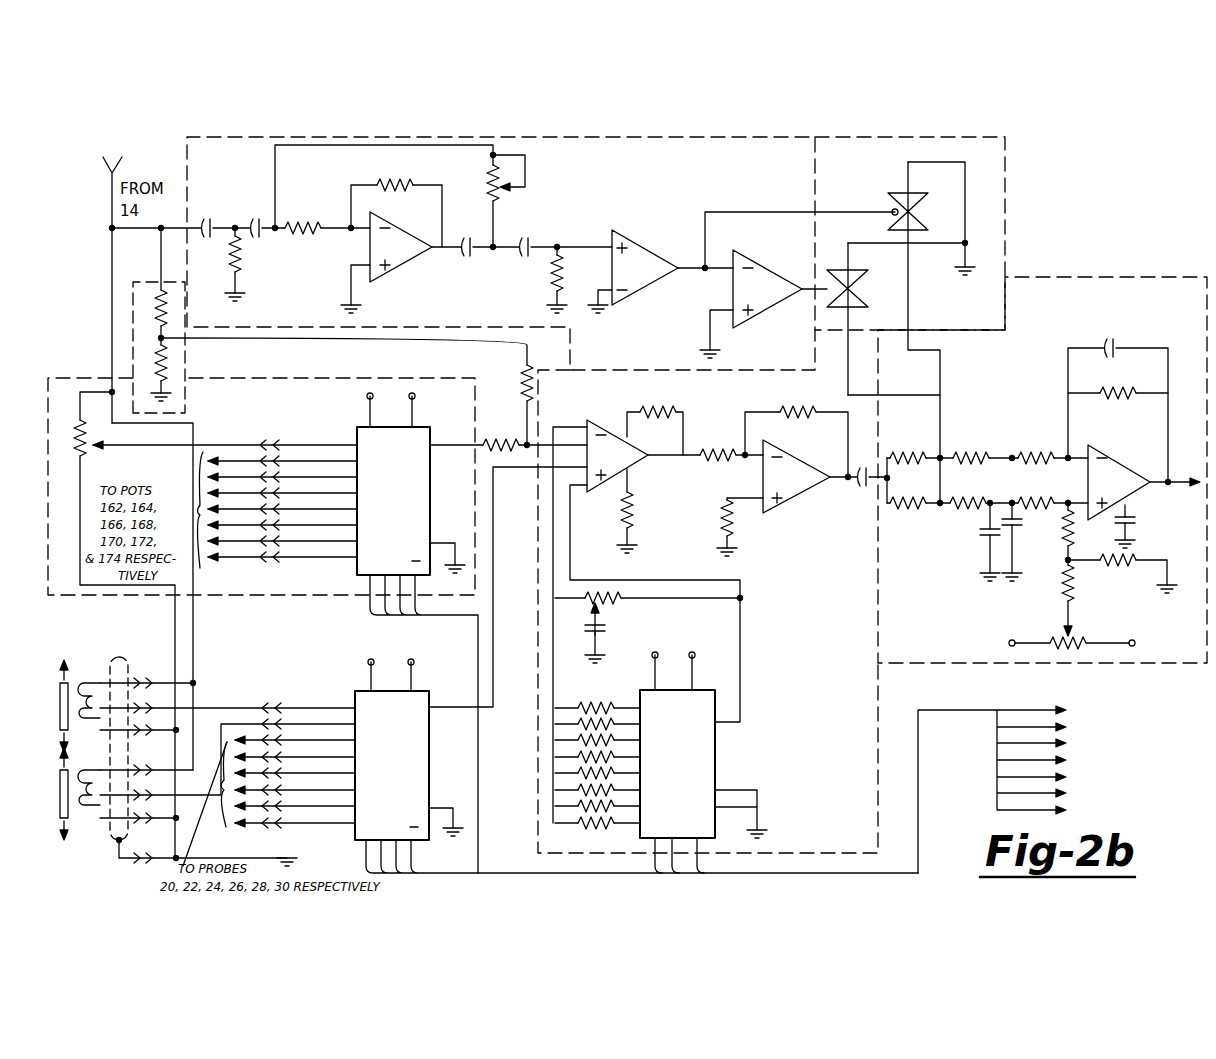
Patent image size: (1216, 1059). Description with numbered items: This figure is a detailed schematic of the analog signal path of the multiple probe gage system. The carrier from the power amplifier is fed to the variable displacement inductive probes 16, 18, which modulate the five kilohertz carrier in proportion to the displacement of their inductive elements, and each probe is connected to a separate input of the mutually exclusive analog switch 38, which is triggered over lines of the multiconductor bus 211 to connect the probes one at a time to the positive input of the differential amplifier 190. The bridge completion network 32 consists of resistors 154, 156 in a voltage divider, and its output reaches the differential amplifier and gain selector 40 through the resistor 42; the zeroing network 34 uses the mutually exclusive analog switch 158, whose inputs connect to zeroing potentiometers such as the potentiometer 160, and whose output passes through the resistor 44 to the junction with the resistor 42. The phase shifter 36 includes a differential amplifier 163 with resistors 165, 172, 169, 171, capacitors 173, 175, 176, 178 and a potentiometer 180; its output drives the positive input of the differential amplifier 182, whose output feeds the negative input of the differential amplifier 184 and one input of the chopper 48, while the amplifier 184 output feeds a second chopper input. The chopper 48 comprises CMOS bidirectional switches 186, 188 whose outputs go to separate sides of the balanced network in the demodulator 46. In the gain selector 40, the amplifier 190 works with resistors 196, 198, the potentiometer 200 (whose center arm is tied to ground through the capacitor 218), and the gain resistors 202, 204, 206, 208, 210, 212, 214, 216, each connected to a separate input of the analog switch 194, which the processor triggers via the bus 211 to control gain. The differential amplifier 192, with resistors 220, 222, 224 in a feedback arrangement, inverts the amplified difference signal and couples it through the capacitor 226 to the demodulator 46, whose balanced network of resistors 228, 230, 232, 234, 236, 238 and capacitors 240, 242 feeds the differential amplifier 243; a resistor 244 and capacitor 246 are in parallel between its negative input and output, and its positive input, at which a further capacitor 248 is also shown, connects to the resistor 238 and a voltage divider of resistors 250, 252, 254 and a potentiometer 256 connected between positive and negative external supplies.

The variable displacement inductive probe 16 is at (92, 680).
The variable displacement inductive probe 18 is at (95, 825).
The bridge completion network 32 is at (142, 278).
The zeroing network 34 is at (70, 375).
The phase shifter 36 is at (808, 155).
The mutually exclusive analog switch 38 is at (432, 720).
The differential amplifier and gain selector 40 is at (880, 815).
The resistor 42 is at (526, 373).
The resistor 44 is at (515, 440).
The demodulator 46 is at (1110, 272).
The chopper 48 is at (1012, 174).
The resistor 154 is at (157, 305).
The resistor 156 is at (170, 368).
The mutually exclusive analog switch 158 is at (355, 562).
The potentiometer 160 is at (215, 639).
The differential amplifier 163 is at (385, 282).
The resistor 165 is at (328, 200).
The resistor 169 is at (242, 280).
The resistor 171 is at (430, 160).
The resistor 172 is at (553, 280).
The capacitor 173 is at (204, 222).
The capacitor 175 is at (262, 242).
The capacitor 176 is at (462, 258).
The capacitor 178 is at (530, 240).
The potentiometer 180 is at (506, 200).
The differential amplifier 182 is at (650, 242).
The differential amplifier 184 is at (785, 240).
The CMOS bidirectional switch 186 is at (895, 192).
The CMOS bidirectional switch 188 is at (840, 268).
The differential amplifier 190 is at (600, 420).
The differential amplifier 192 is at (837, 440).
The mutually exclusive analog switch 194 is at (718, 758).
The resistor 196 is at (655, 417).
The resistor 198 is at (632, 507).
The potentiometer 200 is at (625, 598).
The resistor 202 is at (575, 705).
The resistor 204 is at (612, 724).
The resistor 206 is at (616, 740).
The resistor 208 is at (578, 756).
The resistor 210 is at (578, 773).
The multiconductor bus 211 is at (950, 683).
The resistor 212 is at (578, 790).
The resistor 214 is at (578, 806).
The resistor 216 is at (596, 828).
The capacitor 218 is at (607, 632).
The resistor 220 is at (733, 428).
The resistor 222 is at (826, 390).
The resistor 224 is at (735, 535).
The capacitor 226 is at (862, 487).
The resistor 228 is at (905, 455).
The resistor 230 is at (965, 455).
The resistor 232 is at (1058, 415).
The resistor 234 is at (900, 510).
The resistor 236 is at (955, 508).
The resistor 238 is at (1062, 480).
The capacitor 240 is at (1018, 527).
The capacitor 242 is at (985, 532).
The differential amplifier 243 is at (1150, 428).
The resistor 244 is at (1118, 423).
The capacitor 246 is at (1113, 342).
The capacitor 248 is at (1137, 518).
The resistor 250 is at (1073, 525).
The resistor 252 is at (1122, 575).
The resistor 254 is at (1075, 612).
The potentiometer 256 is at (1062, 633).